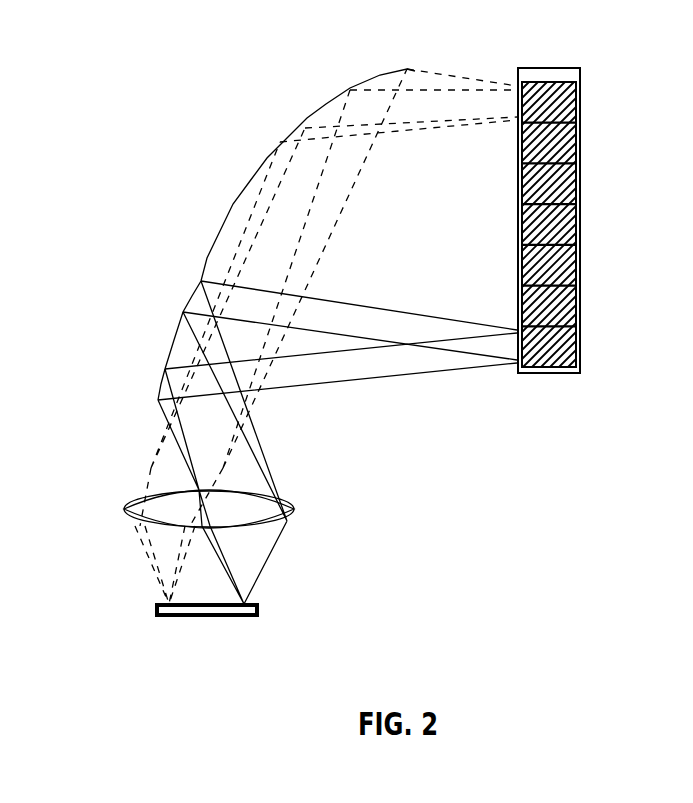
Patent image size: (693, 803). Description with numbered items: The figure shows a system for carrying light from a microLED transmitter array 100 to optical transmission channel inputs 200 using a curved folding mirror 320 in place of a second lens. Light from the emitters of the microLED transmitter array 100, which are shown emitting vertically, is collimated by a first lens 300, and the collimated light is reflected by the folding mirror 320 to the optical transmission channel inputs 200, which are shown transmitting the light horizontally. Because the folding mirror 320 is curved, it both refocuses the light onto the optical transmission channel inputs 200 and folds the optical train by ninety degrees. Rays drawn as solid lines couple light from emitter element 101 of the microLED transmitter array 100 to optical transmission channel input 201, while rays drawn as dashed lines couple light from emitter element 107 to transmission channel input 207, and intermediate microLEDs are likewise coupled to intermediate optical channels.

The microLED transmitter array 100 is at (212, 609).
The emitter element 101 is at (239, 609).
The emitter element 107 is at (161, 609).
The optical transmission channel inputs 200 is at (572, 90).
The optical transmission channel input 201 is at (572, 332).
The transmission channel input 207 is at (572, 113).
The first lens 300 is at (112, 504).
The folding mirror 320 is at (289, 212).